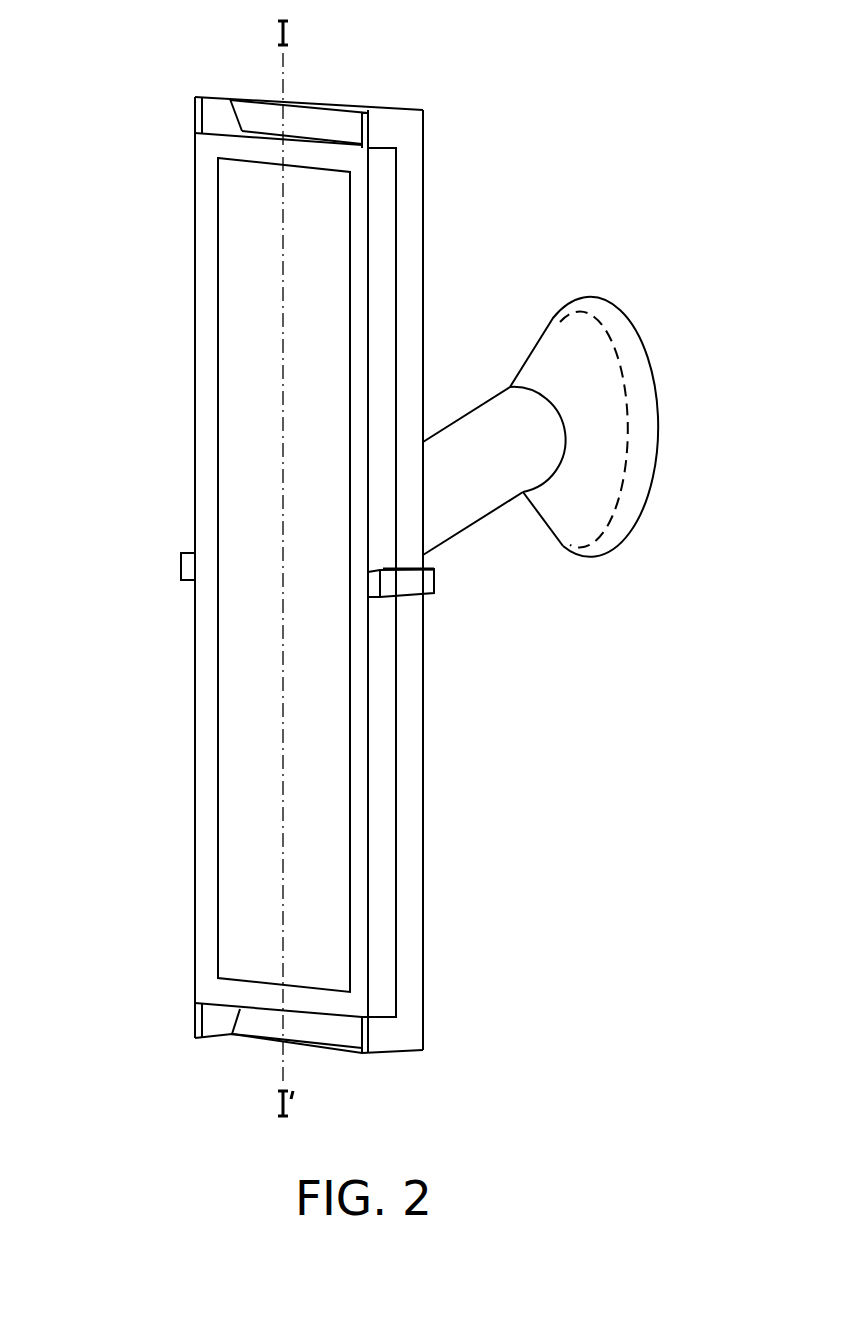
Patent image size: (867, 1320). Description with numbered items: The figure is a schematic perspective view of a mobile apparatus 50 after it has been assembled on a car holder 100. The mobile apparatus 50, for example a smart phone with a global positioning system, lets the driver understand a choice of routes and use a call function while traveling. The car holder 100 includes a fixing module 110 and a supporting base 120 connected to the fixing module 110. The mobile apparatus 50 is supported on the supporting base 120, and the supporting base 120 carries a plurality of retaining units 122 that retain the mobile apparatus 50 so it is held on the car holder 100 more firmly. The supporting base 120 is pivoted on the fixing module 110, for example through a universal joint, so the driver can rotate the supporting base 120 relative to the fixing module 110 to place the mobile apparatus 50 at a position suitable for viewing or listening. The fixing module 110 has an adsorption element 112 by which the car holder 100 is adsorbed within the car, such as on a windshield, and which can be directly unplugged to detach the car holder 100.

The car holder 100 is at (428, 66).
The supporting base 120 is at (410, 177).
The mobile apparatus 50 is at (205, 243).
The retaining units 122 is at (190, 563).
The fixing module 110 is at (550, 508).
The adsorption element 112 is at (642, 495).